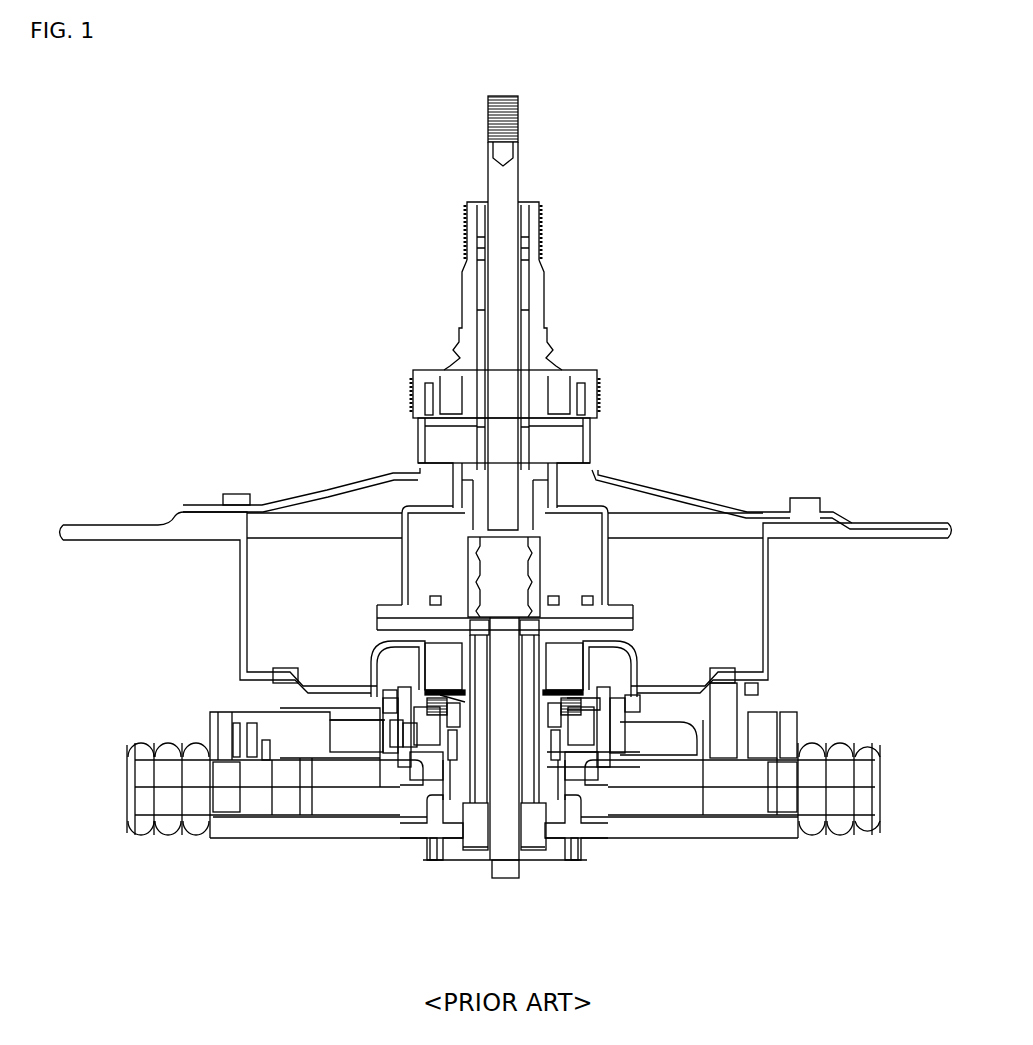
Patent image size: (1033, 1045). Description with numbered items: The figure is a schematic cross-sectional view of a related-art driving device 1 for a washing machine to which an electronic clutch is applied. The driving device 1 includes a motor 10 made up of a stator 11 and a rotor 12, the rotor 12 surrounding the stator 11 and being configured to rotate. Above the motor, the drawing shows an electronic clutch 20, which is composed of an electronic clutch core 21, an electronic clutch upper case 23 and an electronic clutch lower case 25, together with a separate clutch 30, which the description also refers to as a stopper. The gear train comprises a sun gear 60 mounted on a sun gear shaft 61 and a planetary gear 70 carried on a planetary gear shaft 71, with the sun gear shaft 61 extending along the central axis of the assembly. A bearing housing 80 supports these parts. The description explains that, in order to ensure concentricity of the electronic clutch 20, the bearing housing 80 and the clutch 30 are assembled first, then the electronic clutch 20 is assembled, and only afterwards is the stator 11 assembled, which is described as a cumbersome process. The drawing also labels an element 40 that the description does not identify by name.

The driving device 1 is at (410, 146).
The motor 10 is at (830, 918).
The stator 11 is at (830, 776).
The rotor 12 is at (755, 830).
The electronic clutch 20 is at (675, 918).
The electronic clutch core 21 is at (580, 738).
The electronic clutch upper case 23 is at (618, 720).
The electronic clutch lower case 25 is at (612, 703).
The clutch 30 is at (550, 790).
The bearing housing 40 is at (725, 742).
The sun gear 60 is at (470, 582).
The sun gear shaft 61 is at (495, 722).
The planetary gear 70 is at (417, 565).
The planetary gear shaft 71 is at (455, 642).
The bearing housing 80 is at (768, 663).